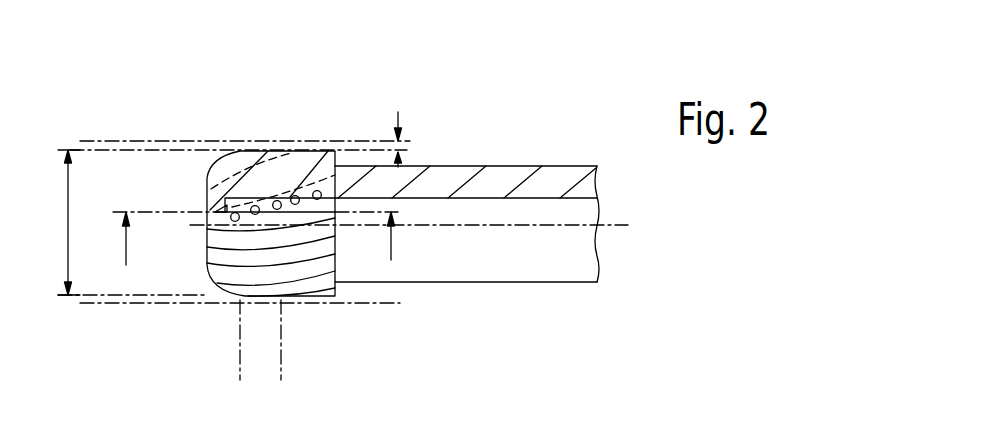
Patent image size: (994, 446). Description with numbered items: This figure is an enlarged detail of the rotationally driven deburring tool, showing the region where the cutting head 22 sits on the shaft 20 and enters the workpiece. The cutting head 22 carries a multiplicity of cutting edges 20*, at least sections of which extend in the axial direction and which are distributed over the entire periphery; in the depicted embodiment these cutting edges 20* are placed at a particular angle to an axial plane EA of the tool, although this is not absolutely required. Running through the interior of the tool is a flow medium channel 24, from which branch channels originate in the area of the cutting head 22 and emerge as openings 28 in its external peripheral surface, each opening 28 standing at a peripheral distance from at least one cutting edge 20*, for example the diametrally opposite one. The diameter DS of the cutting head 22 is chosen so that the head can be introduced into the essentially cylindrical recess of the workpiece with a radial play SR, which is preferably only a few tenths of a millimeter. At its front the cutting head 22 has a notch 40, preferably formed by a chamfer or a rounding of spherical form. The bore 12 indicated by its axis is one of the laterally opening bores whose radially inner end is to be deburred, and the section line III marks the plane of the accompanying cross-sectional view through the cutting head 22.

The bore 12 is at (279, 342).
The shaft 20 is at (251, 263).
The cutting head 22 is at (290, 131).
The interior flow medium channel 24 is at (530, 215).
The opening 28 is at (258, 214).
The notch 40 is at (251, 217).
The diameter of cutting head DS is at (66, 230).
The radial play SR is at (403, 143).
The axial plane EA is at (572, 226).
The section line III is at (259, 243).